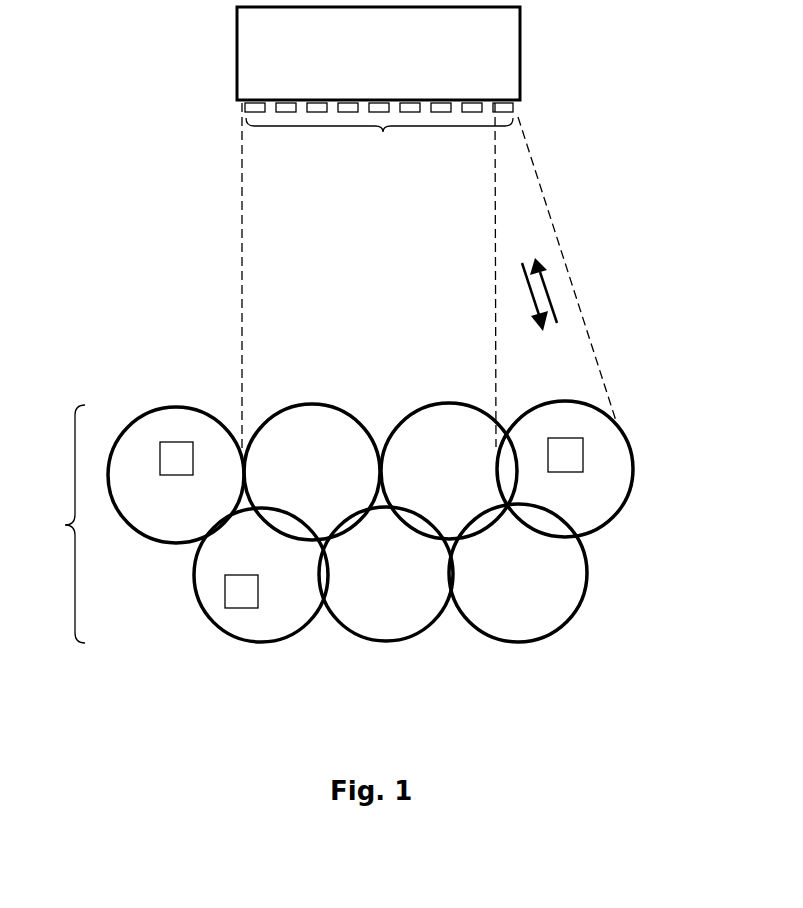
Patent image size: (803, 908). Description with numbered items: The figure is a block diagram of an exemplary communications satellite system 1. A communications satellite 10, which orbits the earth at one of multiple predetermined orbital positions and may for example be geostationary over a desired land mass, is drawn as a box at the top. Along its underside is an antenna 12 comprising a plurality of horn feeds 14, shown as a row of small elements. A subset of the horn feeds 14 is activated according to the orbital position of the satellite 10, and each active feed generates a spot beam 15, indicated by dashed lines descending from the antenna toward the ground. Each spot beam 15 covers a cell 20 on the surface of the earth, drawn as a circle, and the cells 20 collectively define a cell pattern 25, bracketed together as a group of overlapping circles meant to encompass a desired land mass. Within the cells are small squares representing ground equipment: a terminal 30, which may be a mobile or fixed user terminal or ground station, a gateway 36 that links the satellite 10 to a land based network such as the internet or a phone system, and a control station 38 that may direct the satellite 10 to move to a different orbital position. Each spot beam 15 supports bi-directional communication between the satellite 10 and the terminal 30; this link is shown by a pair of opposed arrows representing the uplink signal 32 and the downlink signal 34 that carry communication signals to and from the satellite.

The communications satellite system 1 is at (687, 59).
The communications satellite 10 is at (520, 42).
The antenna 12 is at (379, 145).
The horn feeds 14 is at (515, 107).
The spot beam 15 is at (543, 191).
The cell 20 is at (633, 470).
The cell pattern 25 is at (374, 522).
The terminal 30 is at (583, 447).
The uplink signal 32 is at (547, 290).
The downlink signal 34 is at (535, 300).
The gateway 36 is at (160, 442).
The control station 38 is at (227, 597).